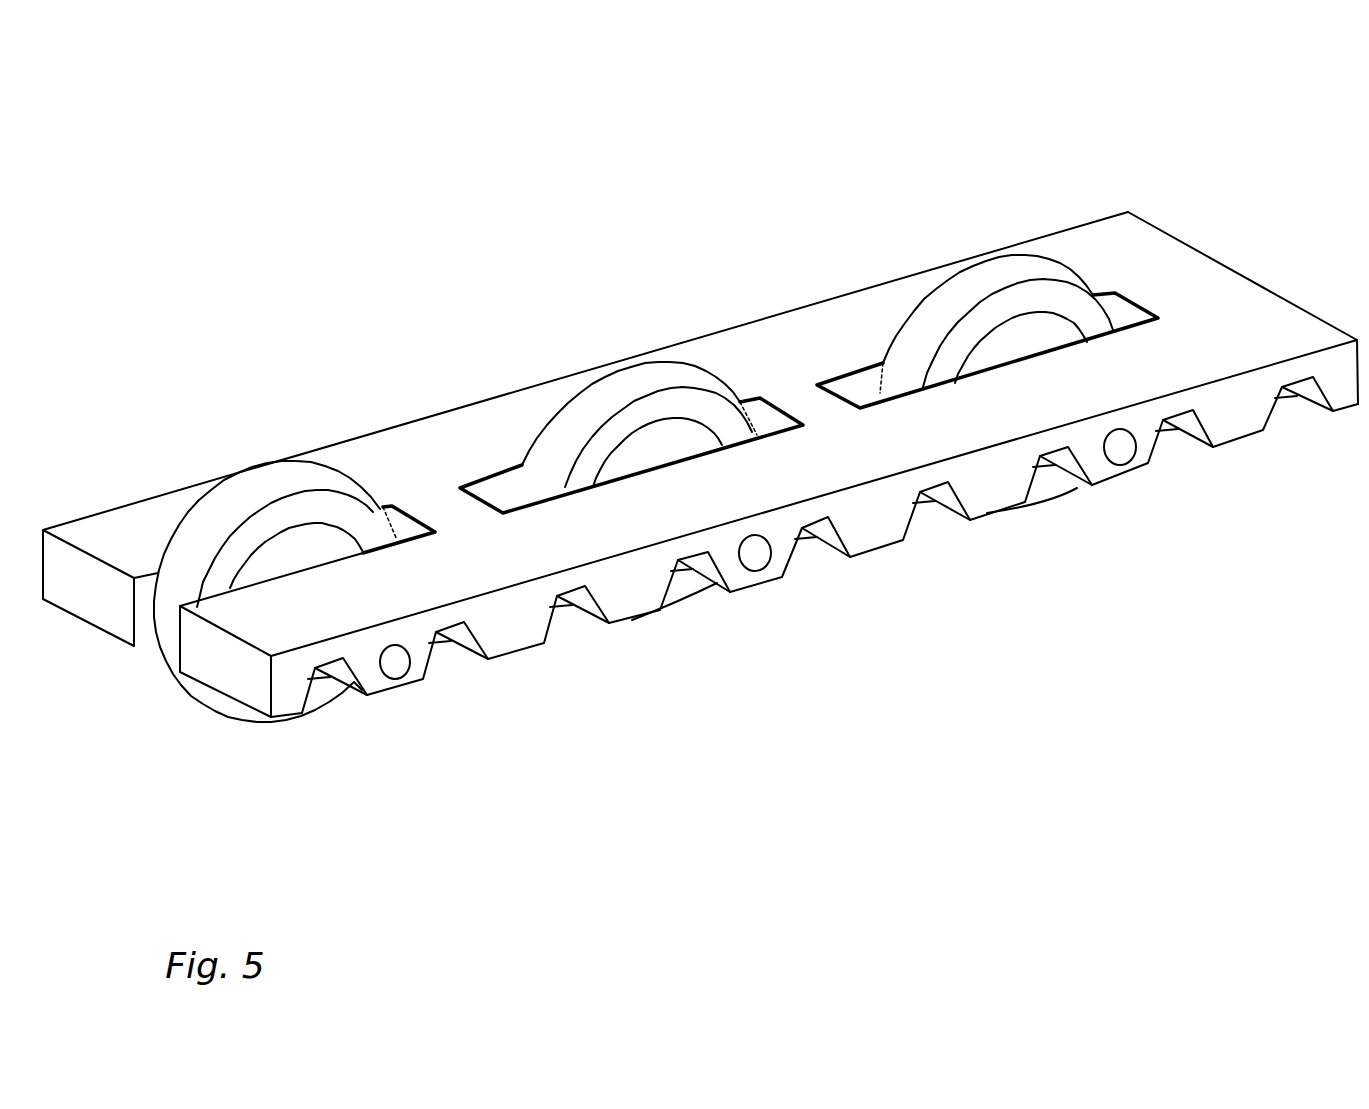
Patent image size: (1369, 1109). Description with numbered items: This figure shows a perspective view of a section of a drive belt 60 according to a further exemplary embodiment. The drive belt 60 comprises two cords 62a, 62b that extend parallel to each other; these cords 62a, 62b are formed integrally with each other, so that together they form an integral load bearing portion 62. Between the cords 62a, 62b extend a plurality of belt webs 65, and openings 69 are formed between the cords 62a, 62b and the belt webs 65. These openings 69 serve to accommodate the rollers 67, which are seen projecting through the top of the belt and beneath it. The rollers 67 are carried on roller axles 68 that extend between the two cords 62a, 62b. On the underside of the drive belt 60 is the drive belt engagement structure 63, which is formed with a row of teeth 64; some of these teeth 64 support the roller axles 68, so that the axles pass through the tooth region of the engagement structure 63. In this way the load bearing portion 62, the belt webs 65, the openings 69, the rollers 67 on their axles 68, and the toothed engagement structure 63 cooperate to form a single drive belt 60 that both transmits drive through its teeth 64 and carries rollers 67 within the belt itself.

The drive belt 60 is at (1165, 141).
The integral load bearing portion 62 is at (1281, 267).
The cord 62a is at (123, 523).
The cord 62b is at (213, 668).
The drive belt engagement structure 63 is at (582, 724).
The teeth 64 is at (287, 712).
The belt webs 65 is at (428, 518).
The rollers 67 is at (252, 485).
The roller axles 68 is at (398, 673).
The openings 69 is at (375, 490).